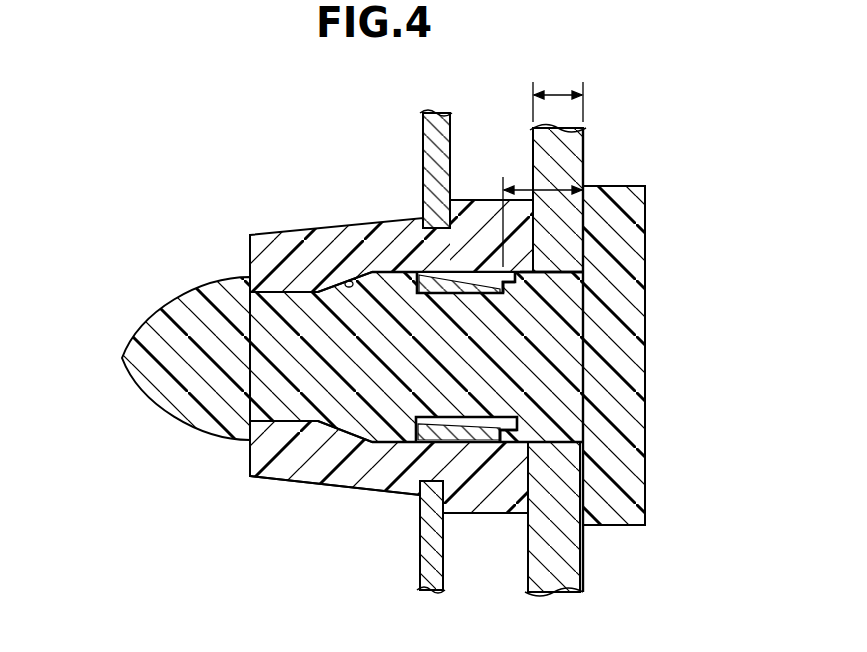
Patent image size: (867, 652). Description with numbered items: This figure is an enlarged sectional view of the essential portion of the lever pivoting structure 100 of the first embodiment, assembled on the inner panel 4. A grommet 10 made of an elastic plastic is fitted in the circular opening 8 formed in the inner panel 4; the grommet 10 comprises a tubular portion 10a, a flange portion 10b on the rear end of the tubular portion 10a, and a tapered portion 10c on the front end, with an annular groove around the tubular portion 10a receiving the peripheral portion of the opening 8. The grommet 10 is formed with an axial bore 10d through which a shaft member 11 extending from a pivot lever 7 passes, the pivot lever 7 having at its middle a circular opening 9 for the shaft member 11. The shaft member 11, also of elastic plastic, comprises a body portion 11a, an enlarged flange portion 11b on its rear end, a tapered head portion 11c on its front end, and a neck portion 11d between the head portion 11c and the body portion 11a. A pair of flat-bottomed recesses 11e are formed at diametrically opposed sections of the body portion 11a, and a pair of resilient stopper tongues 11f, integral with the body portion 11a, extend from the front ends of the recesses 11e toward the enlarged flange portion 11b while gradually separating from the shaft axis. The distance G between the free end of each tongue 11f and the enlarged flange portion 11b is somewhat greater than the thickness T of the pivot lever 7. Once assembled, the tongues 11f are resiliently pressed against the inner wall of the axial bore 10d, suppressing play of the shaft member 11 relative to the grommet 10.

The lever pivoting structure 100 is at (737, 82).
The inner panel 4 is at (423, 130).
The pivot lever 7 is at (581, 139).
The circular opening 8 is at (424, 232).
The circular opening 9 is at (556, 278).
The grommet 10 is at (391, 370).
The tubular portion 10a is at (417, 517).
The flange portion 10b is at (484, 513).
The tapered portion 10c is at (400, 491).
The axial bore 10d is at (348, 281).
The shaft member 11 is at (391, 345).
The body portion 11a is at (557, 402).
The enlarged flange portion 11b is at (631, 371).
The tapered head portion 11c is at (131, 387).
The neck portion 11d is at (283, 292).
The flat-bottomed recess 11e is at (491, 422).
The resilient stopper tongue 11f is at (466, 288).
The thickness of the pivot lever T is at (558, 93).
The distance between tongue free end and flange portion G is at (555, 188).